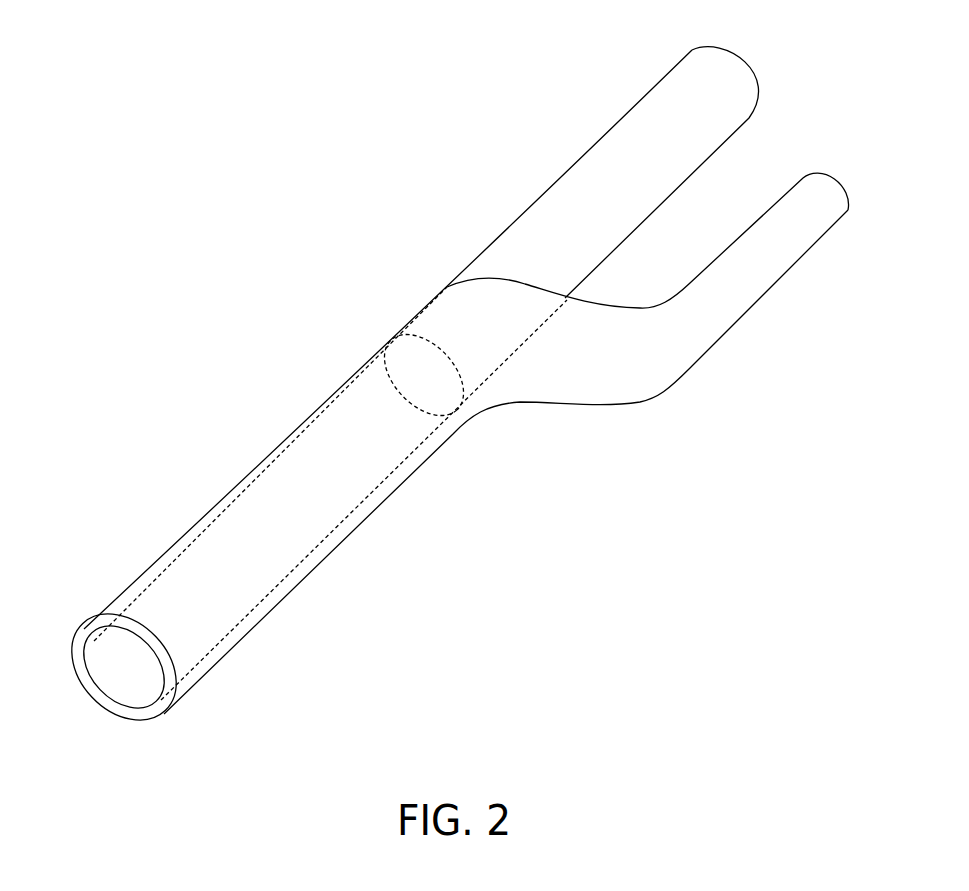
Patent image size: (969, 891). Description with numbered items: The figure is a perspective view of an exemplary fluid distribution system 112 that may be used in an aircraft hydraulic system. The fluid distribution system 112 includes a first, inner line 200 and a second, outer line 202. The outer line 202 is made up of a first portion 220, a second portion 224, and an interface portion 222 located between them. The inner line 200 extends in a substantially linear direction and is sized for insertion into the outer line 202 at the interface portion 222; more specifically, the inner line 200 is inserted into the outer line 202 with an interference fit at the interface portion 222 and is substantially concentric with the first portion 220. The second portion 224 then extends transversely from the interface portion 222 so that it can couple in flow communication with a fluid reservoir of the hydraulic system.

The fluid distribution system 112 is at (250, 185).
The inner line 200 is at (115, 707).
The outer line 202 is at (105, 620).
The first portion 220 is at (228, 457).
The interface portion 222 is at (388, 313).
The second portion 224 is at (763, 310).